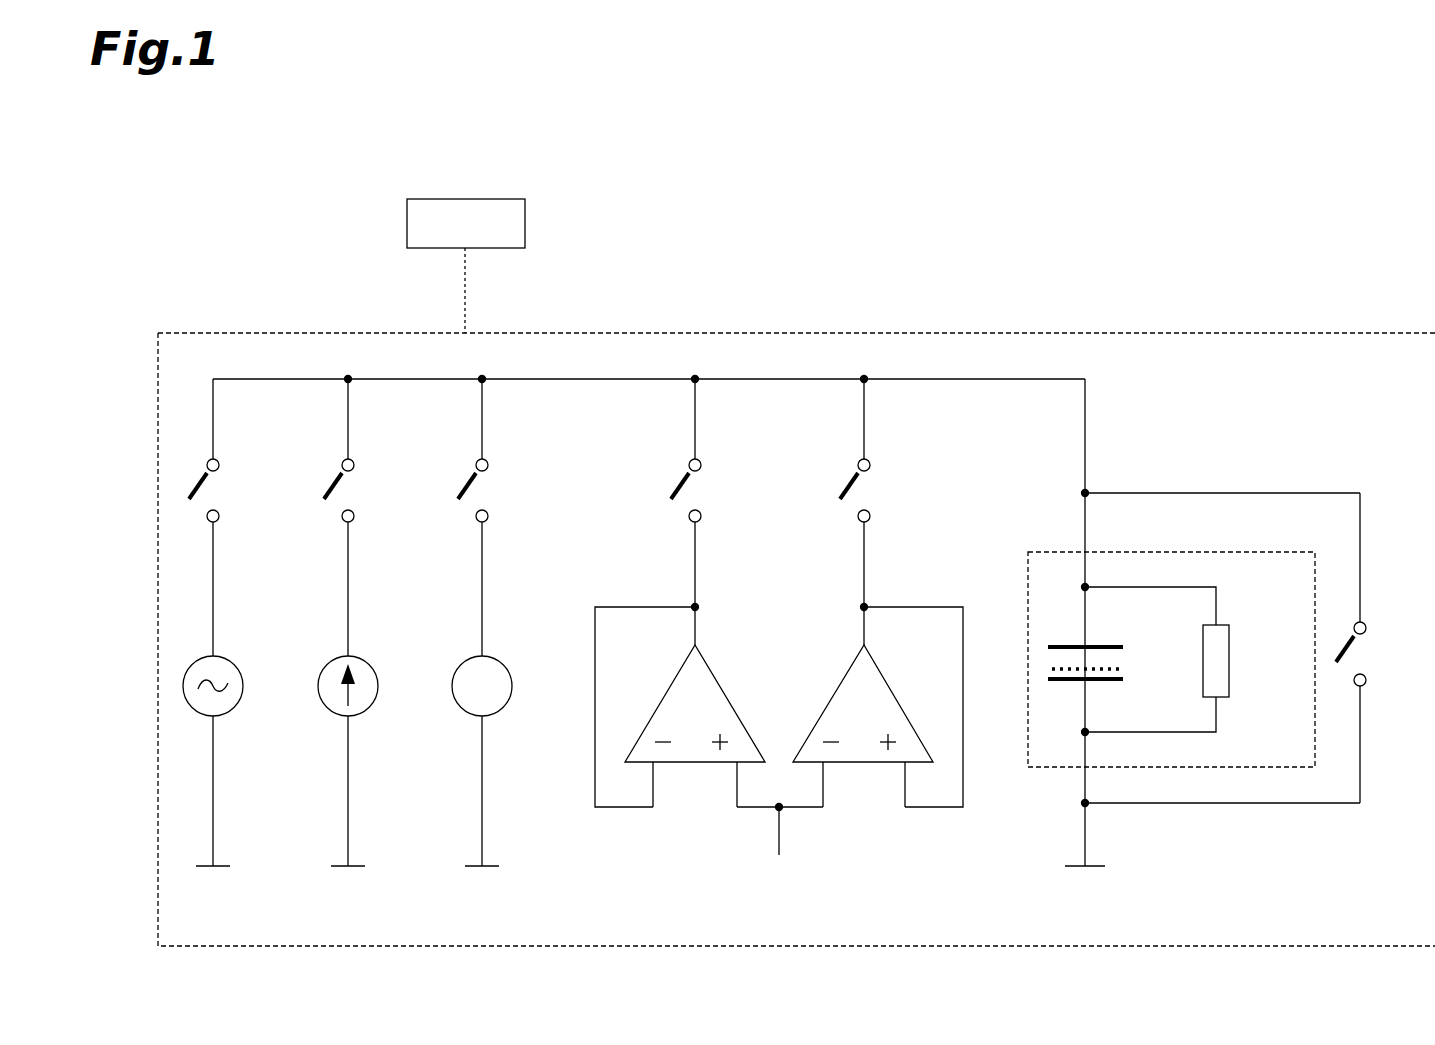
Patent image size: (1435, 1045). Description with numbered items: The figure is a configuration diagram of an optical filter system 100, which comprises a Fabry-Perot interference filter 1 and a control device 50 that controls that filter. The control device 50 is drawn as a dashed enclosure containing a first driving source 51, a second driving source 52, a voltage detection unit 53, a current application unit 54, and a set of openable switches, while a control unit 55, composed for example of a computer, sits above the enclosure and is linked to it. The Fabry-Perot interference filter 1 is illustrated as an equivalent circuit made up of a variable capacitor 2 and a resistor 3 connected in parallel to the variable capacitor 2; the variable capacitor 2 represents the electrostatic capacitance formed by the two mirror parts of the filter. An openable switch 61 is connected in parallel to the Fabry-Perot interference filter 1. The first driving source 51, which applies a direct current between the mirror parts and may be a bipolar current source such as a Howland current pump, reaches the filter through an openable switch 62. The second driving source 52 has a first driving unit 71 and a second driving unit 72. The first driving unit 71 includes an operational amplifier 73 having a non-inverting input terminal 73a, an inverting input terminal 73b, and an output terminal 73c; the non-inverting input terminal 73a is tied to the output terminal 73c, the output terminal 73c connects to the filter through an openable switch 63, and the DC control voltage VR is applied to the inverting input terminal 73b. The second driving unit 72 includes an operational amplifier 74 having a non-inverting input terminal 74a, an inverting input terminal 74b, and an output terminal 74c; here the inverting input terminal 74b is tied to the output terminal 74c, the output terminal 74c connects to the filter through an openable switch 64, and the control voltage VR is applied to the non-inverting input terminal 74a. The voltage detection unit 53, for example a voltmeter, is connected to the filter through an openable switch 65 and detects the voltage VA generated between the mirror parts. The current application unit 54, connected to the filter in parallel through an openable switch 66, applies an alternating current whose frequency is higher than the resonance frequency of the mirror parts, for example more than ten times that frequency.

The optical filter system 100 is at (1306, 177).
The control device 50 is at (1088, 306).
The control unit 55 is at (525, 209).
The Fabry-Perot interference filter 1 is at (1243, 552).
The variable capacitor 2 is at (1108, 645).
The resistor 3 is at (1229, 661).
The first driving source 51 is at (365, 656).
The second driving source 52 is at (644, 597).
The voltage detection unit 53 is at (499, 656).
The current application unit 54 is at (230, 656).
The openable switch 61 is at (1348, 648).
The openable switch 62 is at (336, 484).
The openable switch 63 is at (852, 484).
The openable switch 64 is at (683, 484).
The openable switch 65 is at (470, 484).
The openable switch 66 is at (201, 484).
The first driving unit 71 is at (946, 812).
The second driving unit 72 is at (608, 812).
The operational amplifier 73 is at (910, 708).
The non-inverting input terminal 73a is at (903, 765).
The inverting input terminal 73b is at (826, 765).
The output terminal 73c is at (869, 645).
The operational amplifier 74 is at (740, 708).
The non-inverting input terminal 74a is at (735, 765).
The inverting input terminal 74b is at (656, 765).
The output terminal 74c is at (700, 645).